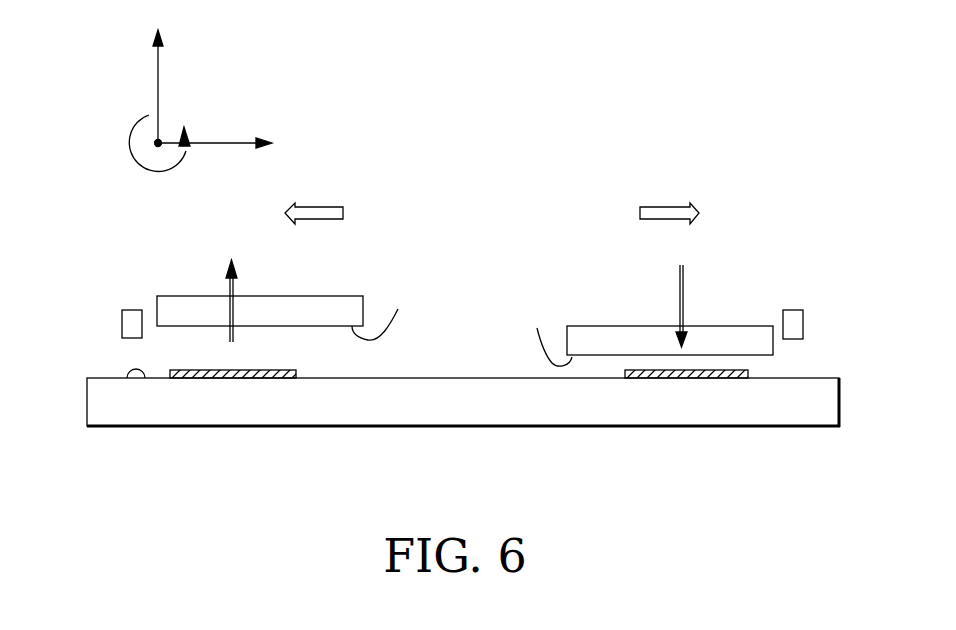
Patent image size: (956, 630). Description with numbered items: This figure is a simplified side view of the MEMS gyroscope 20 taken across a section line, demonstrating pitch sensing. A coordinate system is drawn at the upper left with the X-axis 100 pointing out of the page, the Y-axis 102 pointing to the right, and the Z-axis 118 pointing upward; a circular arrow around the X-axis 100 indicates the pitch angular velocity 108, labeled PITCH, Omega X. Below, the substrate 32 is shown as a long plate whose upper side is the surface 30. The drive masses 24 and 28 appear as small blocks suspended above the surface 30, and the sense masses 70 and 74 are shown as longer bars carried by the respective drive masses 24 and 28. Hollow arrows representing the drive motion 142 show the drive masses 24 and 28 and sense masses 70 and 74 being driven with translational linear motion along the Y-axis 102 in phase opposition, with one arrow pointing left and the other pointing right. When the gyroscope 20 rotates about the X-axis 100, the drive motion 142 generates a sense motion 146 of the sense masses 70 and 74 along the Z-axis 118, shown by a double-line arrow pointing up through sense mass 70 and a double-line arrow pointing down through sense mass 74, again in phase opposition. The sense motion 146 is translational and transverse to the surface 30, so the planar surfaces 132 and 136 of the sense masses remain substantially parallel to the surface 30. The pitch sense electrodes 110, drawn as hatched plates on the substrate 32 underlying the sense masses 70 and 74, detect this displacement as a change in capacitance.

The MEMS gyroscope 20 is at (441, 497).
The drive mass 24 is at (132, 315).
The drive mass 28 is at (792, 316).
The surface 30 is at (129, 378).
The substrate 32 is at (98, 400).
The sense mass 70 is at (332, 303).
The sense mass 74 is at (736, 333).
The X-axis 100 is at (163, 114).
The Y-axis 102 is at (232, 143).
The pitch angular velocity 108 is at (200, 186).
The pitch sense electrodes 110 is at (287, 370).
The Z-axis 118 is at (158, 70).
The planar surface 132 is at (385, 311).
The planar surface 136 is at (542, 333).
The drive motion 142 is at (318, 207).
The sense motion 146 is at (230, 305).